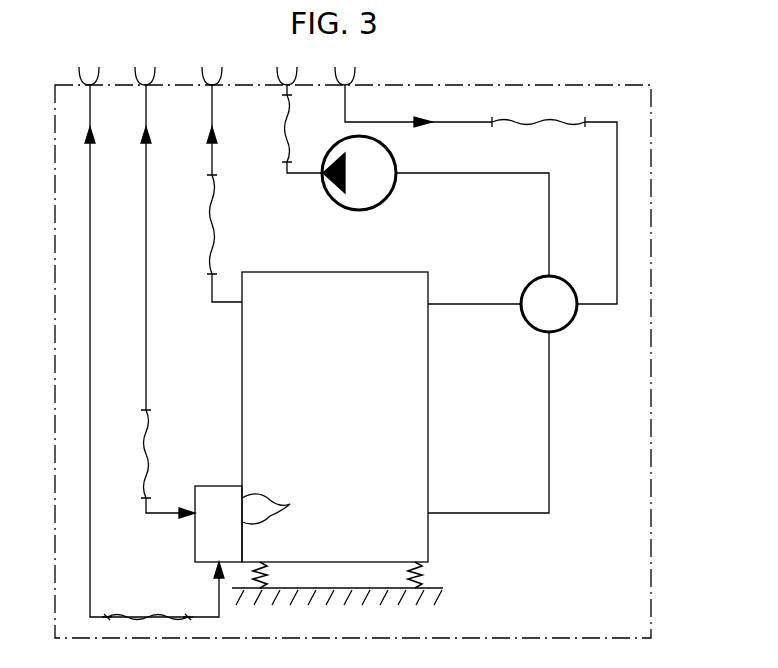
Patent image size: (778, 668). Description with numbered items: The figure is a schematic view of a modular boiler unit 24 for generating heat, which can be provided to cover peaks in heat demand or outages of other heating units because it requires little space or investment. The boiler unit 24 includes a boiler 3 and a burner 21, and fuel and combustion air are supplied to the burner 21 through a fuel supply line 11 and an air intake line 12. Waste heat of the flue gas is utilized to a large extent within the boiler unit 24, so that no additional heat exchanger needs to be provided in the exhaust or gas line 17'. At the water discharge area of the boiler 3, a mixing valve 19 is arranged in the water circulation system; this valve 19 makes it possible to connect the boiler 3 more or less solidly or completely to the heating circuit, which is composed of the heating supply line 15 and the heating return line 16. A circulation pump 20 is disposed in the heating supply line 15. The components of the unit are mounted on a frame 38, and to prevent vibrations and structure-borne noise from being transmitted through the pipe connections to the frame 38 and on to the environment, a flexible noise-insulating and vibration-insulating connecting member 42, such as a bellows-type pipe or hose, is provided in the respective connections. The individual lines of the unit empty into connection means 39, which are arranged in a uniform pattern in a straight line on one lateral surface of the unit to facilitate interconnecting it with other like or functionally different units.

The boiler 3 is at (337, 413).
The fuel supply line 11 is at (147, 340).
The air intake line 12 is at (91, 333).
The heating supply line 15 is at (290, 96).
The heating return line 16 is at (440, 121).
The exhaust or gas line 17' is at (233, 193).
The mixing valve 19 is at (569, 328).
The circulation pump 20 is at (378, 206).
The burner 21 is at (216, 486).
The boiler unit 24 is at (660, 406).
The frame 38 is at (432, 595).
The connection means 39 is at (204, 71).
The flexible noise-insulating and vibration insulating connecting member 42 is at (531, 128).